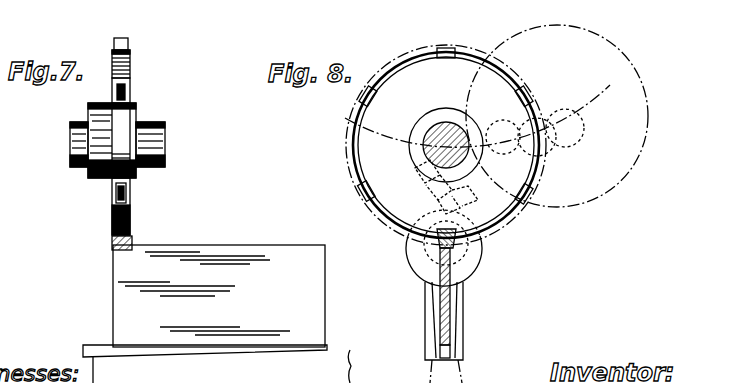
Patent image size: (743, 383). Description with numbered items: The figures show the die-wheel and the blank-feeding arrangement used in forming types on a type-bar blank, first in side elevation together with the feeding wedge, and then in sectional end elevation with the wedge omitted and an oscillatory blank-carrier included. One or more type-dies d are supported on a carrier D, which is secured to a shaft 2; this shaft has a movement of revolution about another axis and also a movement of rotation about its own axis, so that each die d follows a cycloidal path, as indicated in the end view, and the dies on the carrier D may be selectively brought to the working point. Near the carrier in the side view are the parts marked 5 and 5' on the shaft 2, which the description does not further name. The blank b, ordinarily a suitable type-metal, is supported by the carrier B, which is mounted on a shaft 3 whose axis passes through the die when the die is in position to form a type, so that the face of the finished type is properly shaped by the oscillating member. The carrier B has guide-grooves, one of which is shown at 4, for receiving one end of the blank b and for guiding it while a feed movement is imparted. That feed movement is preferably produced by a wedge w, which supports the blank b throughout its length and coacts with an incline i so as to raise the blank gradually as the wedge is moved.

In FIG. 7, the shaft 2 is at (165, 148).
In FIG. 8, the shaft 2 is at (430, 149).
In FIG. 8, the shaft 3 is at (458, 248).
In FIG. 8, the guide-groove 4 is at (438, 360).
In FIG. 7, the shaft thread 5 is at (109, 100).
In FIG. 7, the nut 5' is at (131, 58).
In FIG. 7, the type-die d is at (128, 42).
In FIG. 8, the type-die d is at (446, 48).
In FIG. 7, the carrier D is at (130, 214).
In FIG. 8, the carrier D is at (496, 135).
In FIG. 7, the blank b is at (219, 296).
In FIG. 8, the blank b is at (440, 294).
In FIG. 8, the carrier B is at (462, 301).
In FIG. 7, the wedge w is at (205, 341).
In FIG. 7, the incline i is at (222, 366).